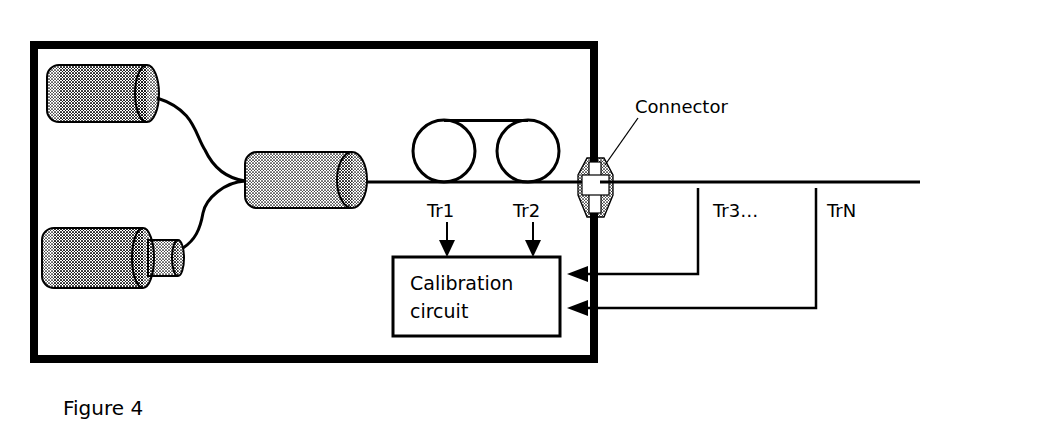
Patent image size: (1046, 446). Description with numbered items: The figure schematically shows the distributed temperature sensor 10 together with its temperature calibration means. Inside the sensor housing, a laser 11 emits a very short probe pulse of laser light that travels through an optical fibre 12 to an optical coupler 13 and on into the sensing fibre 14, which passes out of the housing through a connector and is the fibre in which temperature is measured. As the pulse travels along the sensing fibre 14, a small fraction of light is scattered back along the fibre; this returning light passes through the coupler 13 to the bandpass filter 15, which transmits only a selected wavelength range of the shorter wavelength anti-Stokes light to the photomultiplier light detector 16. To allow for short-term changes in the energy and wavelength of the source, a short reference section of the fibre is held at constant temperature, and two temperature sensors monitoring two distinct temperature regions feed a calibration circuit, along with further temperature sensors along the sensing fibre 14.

The distributed temperature sensor 10 is at (338, 184).
The laser 11 is at (130, 70).
The optical fibre 12 is at (203, 128).
The optical coupler 13 is at (306, 150).
The sensing fibre 14 is at (795, 179).
The bandpass filter 15 is at (183, 277).
The photomultiplier light detector 16 is at (118, 240).